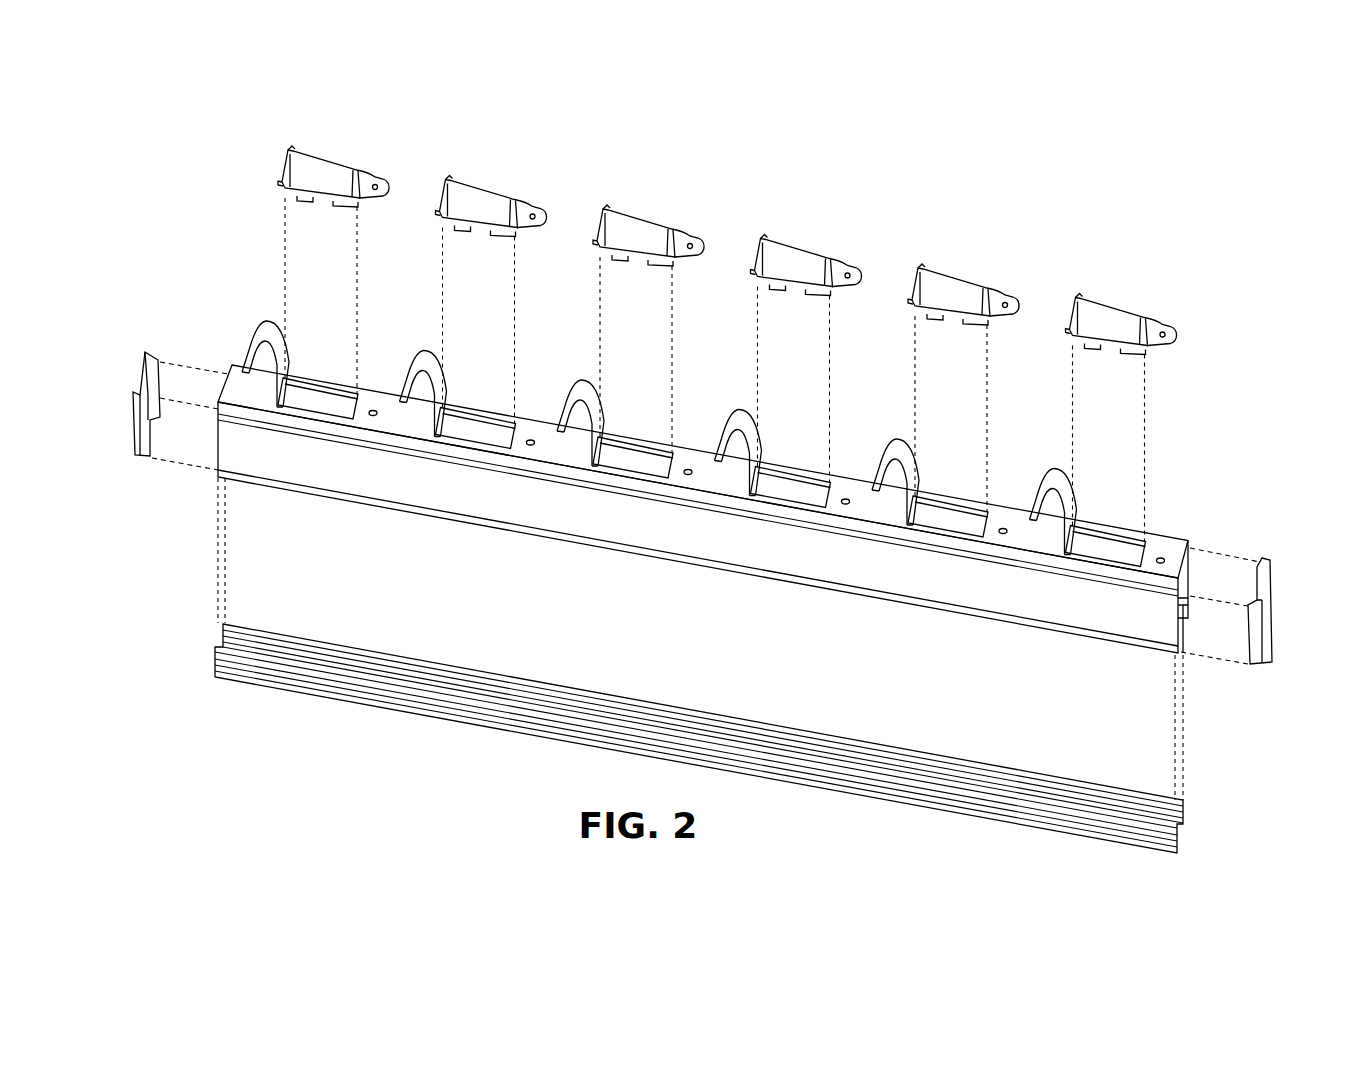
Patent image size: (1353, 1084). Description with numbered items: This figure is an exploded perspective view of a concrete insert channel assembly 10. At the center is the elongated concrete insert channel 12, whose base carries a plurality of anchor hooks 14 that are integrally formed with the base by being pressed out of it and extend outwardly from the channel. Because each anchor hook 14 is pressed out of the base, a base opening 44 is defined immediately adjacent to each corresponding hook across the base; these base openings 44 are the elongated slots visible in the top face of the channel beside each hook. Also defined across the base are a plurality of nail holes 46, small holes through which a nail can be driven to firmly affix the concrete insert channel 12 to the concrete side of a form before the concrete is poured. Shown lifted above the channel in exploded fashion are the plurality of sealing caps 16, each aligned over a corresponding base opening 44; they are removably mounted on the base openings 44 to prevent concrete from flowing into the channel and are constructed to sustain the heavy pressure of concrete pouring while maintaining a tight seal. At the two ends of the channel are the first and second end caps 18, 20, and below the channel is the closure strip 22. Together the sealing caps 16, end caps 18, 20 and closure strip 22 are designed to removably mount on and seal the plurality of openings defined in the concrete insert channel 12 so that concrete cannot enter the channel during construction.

The concrete insert channel assembly 10 is at (893, 236).
The concrete insert channel 12 is at (520, 510).
The anchor hooks 14 is at (265, 318).
The sealing caps 16 is at (483, 203).
The first end cap 18 is at (142, 428).
The second end cap 20 is at (1268, 618).
The closure strip 22 is at (463, 705).
The base openings 44 is at (317, 405).
The nail holes 46 is at (374, 408).